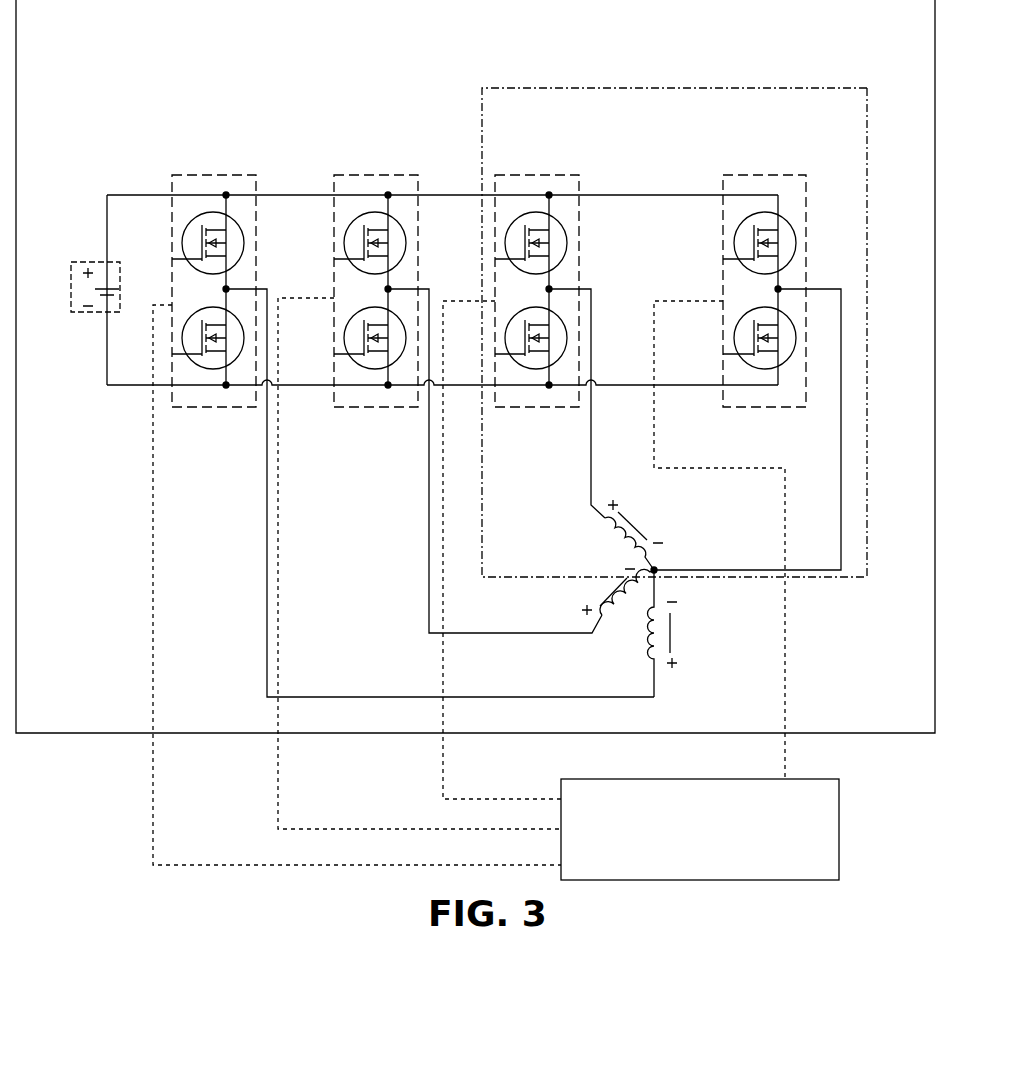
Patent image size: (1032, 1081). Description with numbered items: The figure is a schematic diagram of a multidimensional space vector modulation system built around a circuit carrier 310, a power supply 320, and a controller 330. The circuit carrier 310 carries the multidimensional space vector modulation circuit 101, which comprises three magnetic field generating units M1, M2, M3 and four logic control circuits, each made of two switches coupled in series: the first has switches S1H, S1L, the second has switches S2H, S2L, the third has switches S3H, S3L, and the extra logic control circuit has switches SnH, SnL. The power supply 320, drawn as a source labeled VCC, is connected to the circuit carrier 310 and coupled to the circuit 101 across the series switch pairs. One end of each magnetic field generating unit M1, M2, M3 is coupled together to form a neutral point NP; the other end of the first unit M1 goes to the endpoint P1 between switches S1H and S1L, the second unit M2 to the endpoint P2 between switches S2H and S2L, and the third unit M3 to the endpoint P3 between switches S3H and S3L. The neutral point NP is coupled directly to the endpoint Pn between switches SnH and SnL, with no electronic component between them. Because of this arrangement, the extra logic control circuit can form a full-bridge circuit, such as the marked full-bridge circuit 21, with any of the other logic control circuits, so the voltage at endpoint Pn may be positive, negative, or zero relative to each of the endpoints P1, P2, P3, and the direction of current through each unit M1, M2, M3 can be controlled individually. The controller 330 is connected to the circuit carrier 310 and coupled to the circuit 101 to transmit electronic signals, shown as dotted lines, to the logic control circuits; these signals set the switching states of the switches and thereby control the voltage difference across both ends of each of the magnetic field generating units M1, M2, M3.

The circuit carrier 310 is at (88, 734).
The multidimensional space vector modulation circuit 101 is at (466, 57).
The full-bridge circuit 21 is at (867, 293).
The power supply 320 is at (70, 292).
The supply voltage VCC is at (442, 290).
The switch S1H is at (182, 243).
The switch S1L is at (182, 338).
The switch S2H is at (344, 243).
The switch S2L is at (344, 338).
The switch S3H is at (505, 243).
The switch S3L is at (505, 338).
The switch SnH is at (734, 243).
The switch SnL is at (734, 338).
The endpoint P1 is at (228, 288).
The endpoint P2 is at (390, 288).
The endpoint P3 is at (551, 288).
The endpoint Pn is at (780, 288).
The first magnetic field generating unit M1 is at (672, 633).
The second magnetic field generating unit M2 is at (612, 587).
The third magnetic field generating unit M3 is at (638, 522).
The neutral point NP is at (656, 568).
The controller 330 is at (840, 815).